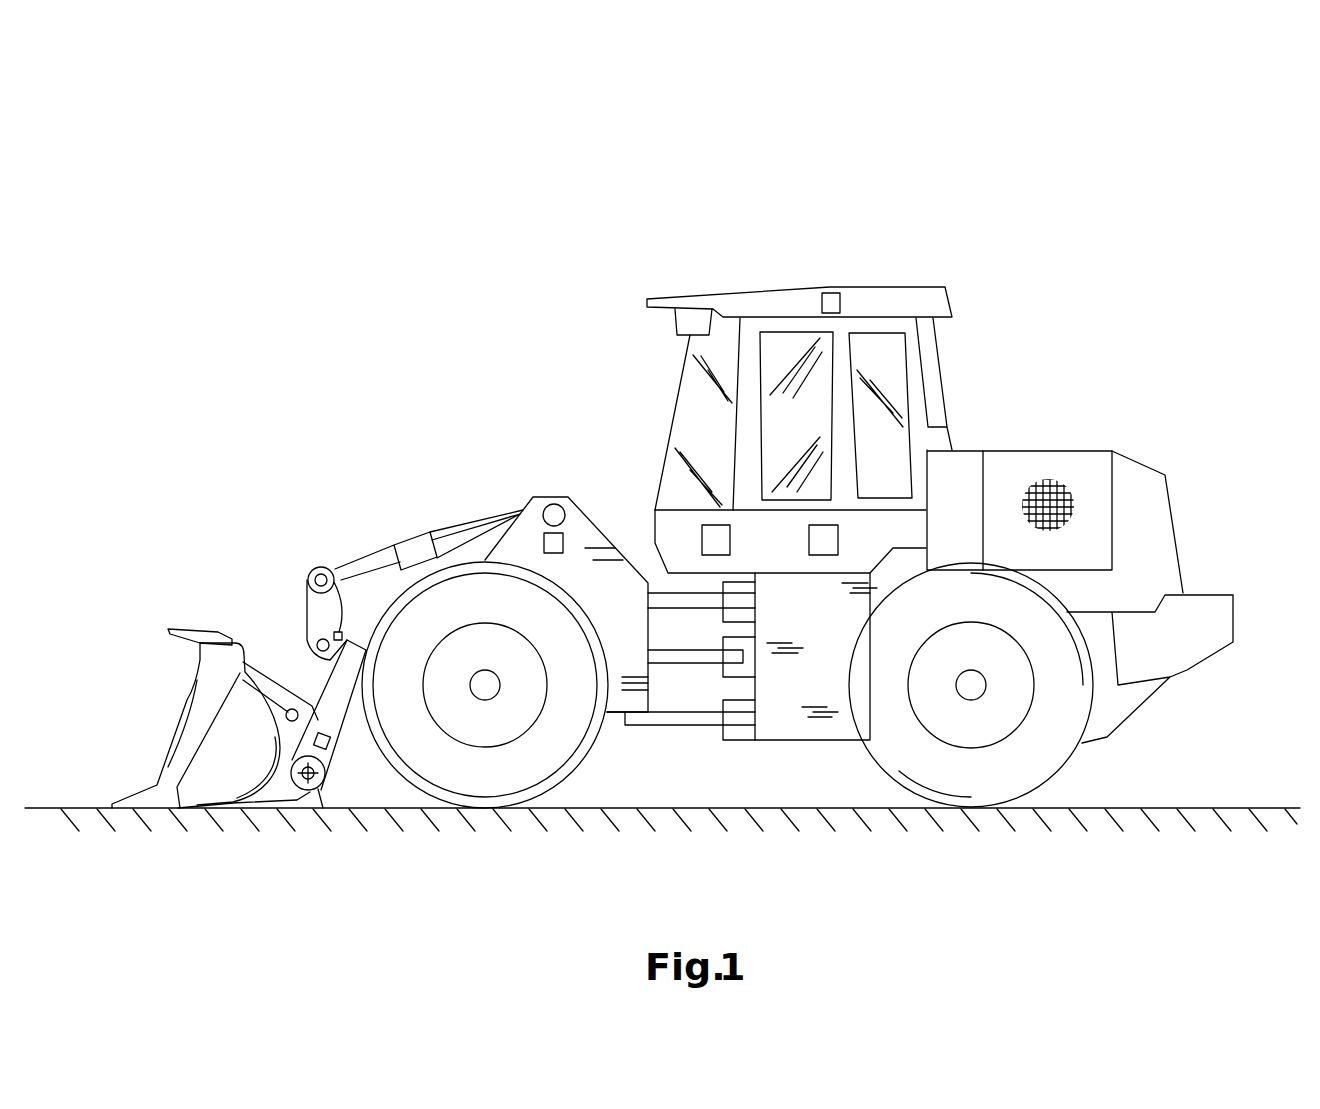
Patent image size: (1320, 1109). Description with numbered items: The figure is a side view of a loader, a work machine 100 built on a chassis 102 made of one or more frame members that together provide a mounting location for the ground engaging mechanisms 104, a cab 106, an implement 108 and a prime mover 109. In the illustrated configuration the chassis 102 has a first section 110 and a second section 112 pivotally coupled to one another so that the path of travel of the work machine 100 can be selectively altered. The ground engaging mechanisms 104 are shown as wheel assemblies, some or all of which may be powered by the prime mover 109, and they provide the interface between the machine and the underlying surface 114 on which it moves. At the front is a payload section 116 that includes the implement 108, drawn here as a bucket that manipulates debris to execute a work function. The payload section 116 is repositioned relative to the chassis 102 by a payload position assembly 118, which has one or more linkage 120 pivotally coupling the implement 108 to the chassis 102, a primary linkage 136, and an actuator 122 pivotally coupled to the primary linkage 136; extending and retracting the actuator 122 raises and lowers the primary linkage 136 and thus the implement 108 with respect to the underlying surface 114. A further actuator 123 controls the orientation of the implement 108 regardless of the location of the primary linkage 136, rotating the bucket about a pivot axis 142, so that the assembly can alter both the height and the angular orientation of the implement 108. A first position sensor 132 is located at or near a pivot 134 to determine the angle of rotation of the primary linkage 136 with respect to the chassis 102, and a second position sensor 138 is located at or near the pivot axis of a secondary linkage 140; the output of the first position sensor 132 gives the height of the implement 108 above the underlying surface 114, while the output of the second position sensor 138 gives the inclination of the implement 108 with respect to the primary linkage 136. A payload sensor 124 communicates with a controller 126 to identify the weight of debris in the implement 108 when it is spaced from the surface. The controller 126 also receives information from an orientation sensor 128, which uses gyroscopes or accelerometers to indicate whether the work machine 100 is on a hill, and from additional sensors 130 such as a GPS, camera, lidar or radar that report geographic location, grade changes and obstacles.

The work machine 100 is at (1096, 186).
The chassis 102 is at (836, 766).
The ground engaging mechanisms 104 is at (549, 753).
The cab 106 is at (734, 282).
The implement 108 is at (195, 782).
The prime mover 109 is at (1094, 440).
The first section 110 is at (617, 634).
The second section 112 is at (775, 760).
The underlying surface 114 is at (1048, 891).
The payload section 116 is at (184, 650).
The payload position assembly 118 is at (375, 526).
The linkage 120 is at (293, 630).
The actuator 122 is at (598, 522).
The actuator 123 is at (430, 528).
The payload sensor 124 is at (357, 778).
The controller 126 is at (717, 540).
The orientation sensor 128 is at (827, 533).
The additional sensors 130 is at (830, 300).
The first position sensor 132 is at (548, 542).
The pivot 134 is at (550, 498).
The primary linkage 136 is at (353, 710).
The second position sensor 138 is at (335, 573).
The secondary linkage 140 is at (327, 652).
The pivot axis 142 is at (323, 812).